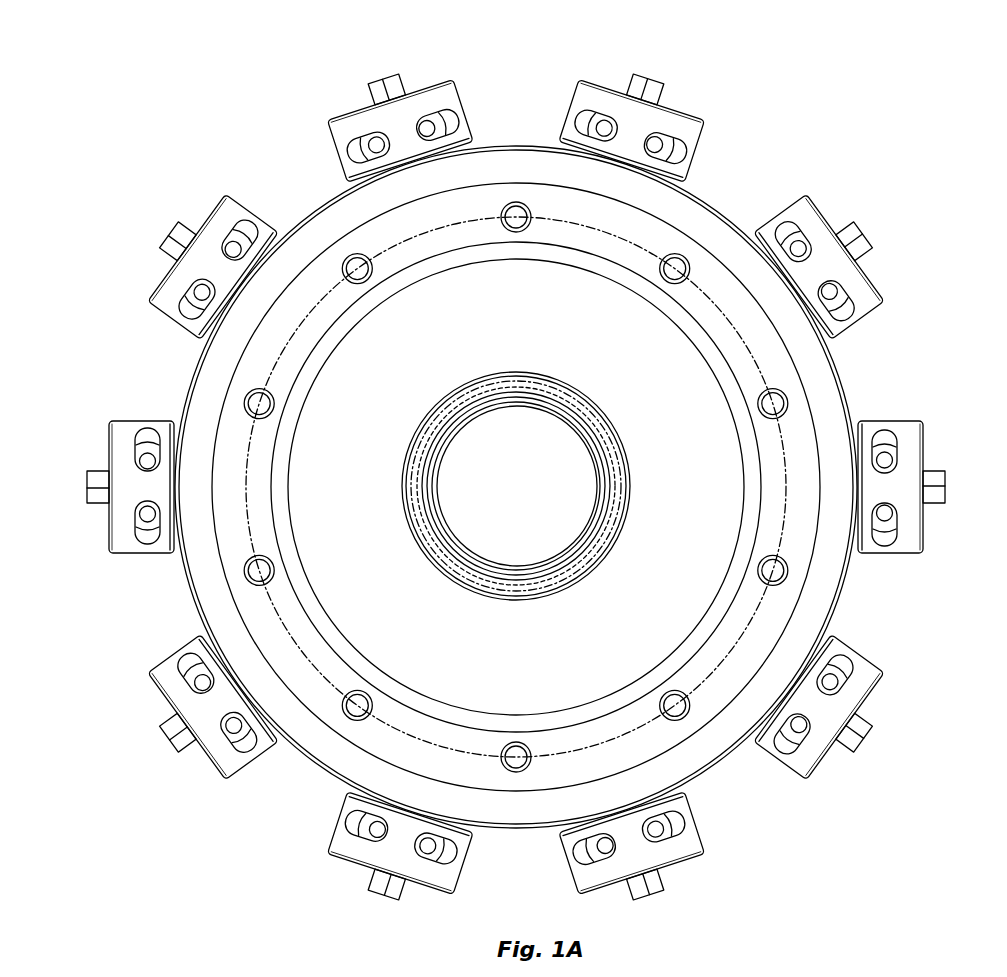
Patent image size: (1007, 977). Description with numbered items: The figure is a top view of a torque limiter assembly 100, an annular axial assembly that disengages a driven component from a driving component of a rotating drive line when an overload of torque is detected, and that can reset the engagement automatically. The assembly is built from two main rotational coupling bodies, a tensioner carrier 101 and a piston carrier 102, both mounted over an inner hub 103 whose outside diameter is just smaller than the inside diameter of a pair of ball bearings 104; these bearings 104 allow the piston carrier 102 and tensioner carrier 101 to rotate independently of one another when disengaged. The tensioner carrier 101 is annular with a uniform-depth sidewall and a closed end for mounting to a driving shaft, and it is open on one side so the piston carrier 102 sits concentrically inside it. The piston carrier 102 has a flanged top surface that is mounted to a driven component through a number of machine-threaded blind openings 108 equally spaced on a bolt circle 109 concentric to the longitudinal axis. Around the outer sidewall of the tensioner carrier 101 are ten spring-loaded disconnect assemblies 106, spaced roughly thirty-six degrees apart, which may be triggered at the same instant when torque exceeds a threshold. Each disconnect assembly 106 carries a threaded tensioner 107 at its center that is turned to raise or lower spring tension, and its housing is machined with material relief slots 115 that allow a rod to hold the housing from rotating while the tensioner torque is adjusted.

The torque limiter assembly 100 is at (221, 146).
The tensioner carrier 101 is at (706, 195).
The piston carrier 102 is at (732, 661).
The inner hub 103 is at (516, 493).
The ball bearings 104 is at (623, 443).
The disconnect assemblies 106 is at (530, 487).
The threaded tensioner 107 is at (391, 78).
The machine-threaded blind openings 108 is at (256, 413).
The bolt circle 109 is at (428, 235).
The material relief slots 115 is at (883, 433).